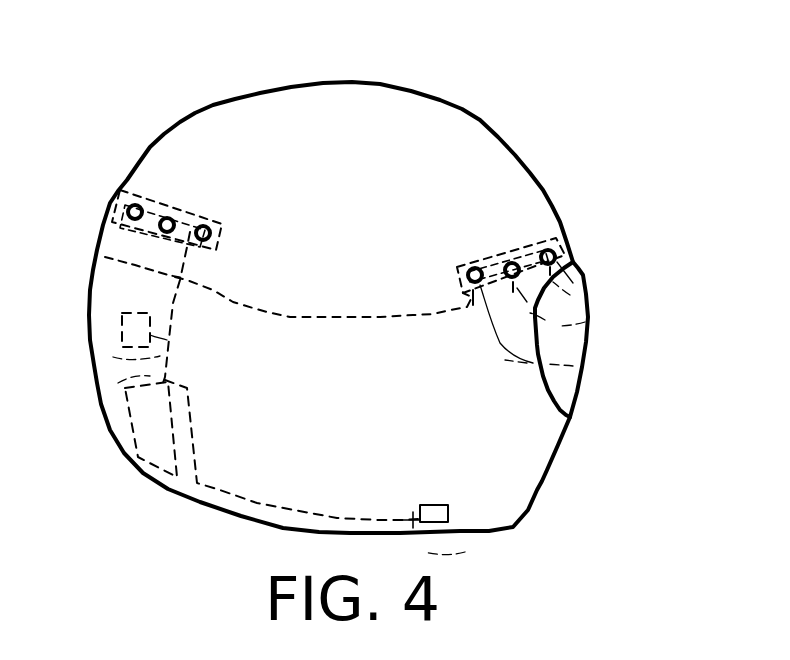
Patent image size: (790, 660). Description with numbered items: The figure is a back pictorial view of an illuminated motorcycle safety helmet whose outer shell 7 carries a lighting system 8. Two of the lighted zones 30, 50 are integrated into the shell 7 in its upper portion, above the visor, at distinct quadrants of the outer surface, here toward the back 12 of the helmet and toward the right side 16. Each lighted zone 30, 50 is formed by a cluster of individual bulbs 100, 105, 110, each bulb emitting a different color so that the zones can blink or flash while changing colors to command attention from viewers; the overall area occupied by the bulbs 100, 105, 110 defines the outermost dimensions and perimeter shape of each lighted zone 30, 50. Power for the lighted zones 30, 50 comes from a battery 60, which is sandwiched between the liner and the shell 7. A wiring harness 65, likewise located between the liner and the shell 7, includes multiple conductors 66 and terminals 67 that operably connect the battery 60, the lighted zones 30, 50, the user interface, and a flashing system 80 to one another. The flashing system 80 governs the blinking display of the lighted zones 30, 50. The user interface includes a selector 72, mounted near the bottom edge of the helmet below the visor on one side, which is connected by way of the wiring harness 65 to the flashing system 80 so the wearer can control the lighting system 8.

The shell 7 is at (473, 128).
The lighting system 8 is at (222, 140).
The back 12 is at (118, 283).
The right side 16 is at (466, 408).
The lighted zone 30 is at (248, 231).
The lighted zone 50 is at (440, 268).
The battery 60 is at (172, 440).
The wiring harness 65 is at (205, 416).
The conductors 66 is at (433, 318).
The terminals 67 is at (110, 203).
The selector 72 is at (448, 512).
The flashing system 80 is at (152, 346).
The bulb 100 is at (137, 200).
The bulb 105 is at (170, 216).
The bulb 110 is at (206, 225).